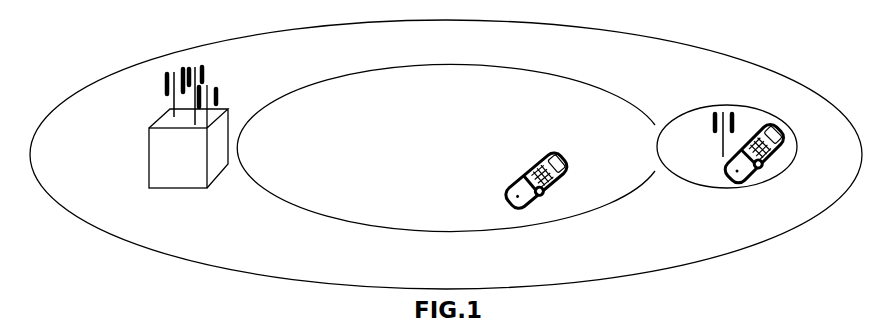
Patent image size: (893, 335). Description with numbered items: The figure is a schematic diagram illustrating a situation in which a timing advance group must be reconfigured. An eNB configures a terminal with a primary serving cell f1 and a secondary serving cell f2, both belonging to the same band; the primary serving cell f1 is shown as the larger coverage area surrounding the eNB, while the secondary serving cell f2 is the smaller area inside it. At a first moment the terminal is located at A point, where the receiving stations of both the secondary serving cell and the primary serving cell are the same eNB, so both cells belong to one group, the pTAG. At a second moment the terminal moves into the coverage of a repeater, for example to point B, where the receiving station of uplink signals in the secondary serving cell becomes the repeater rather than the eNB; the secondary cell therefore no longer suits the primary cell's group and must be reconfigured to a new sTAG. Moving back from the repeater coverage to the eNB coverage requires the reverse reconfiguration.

The primary serving cell f1 is at (446, 154).
The secondary serving cell f2 is at (446, 148).
The element eNB is at (188, 142).
The A point A is at (525, 182).
The element repeater is at (727, 133).
The point B is at (756, 158).